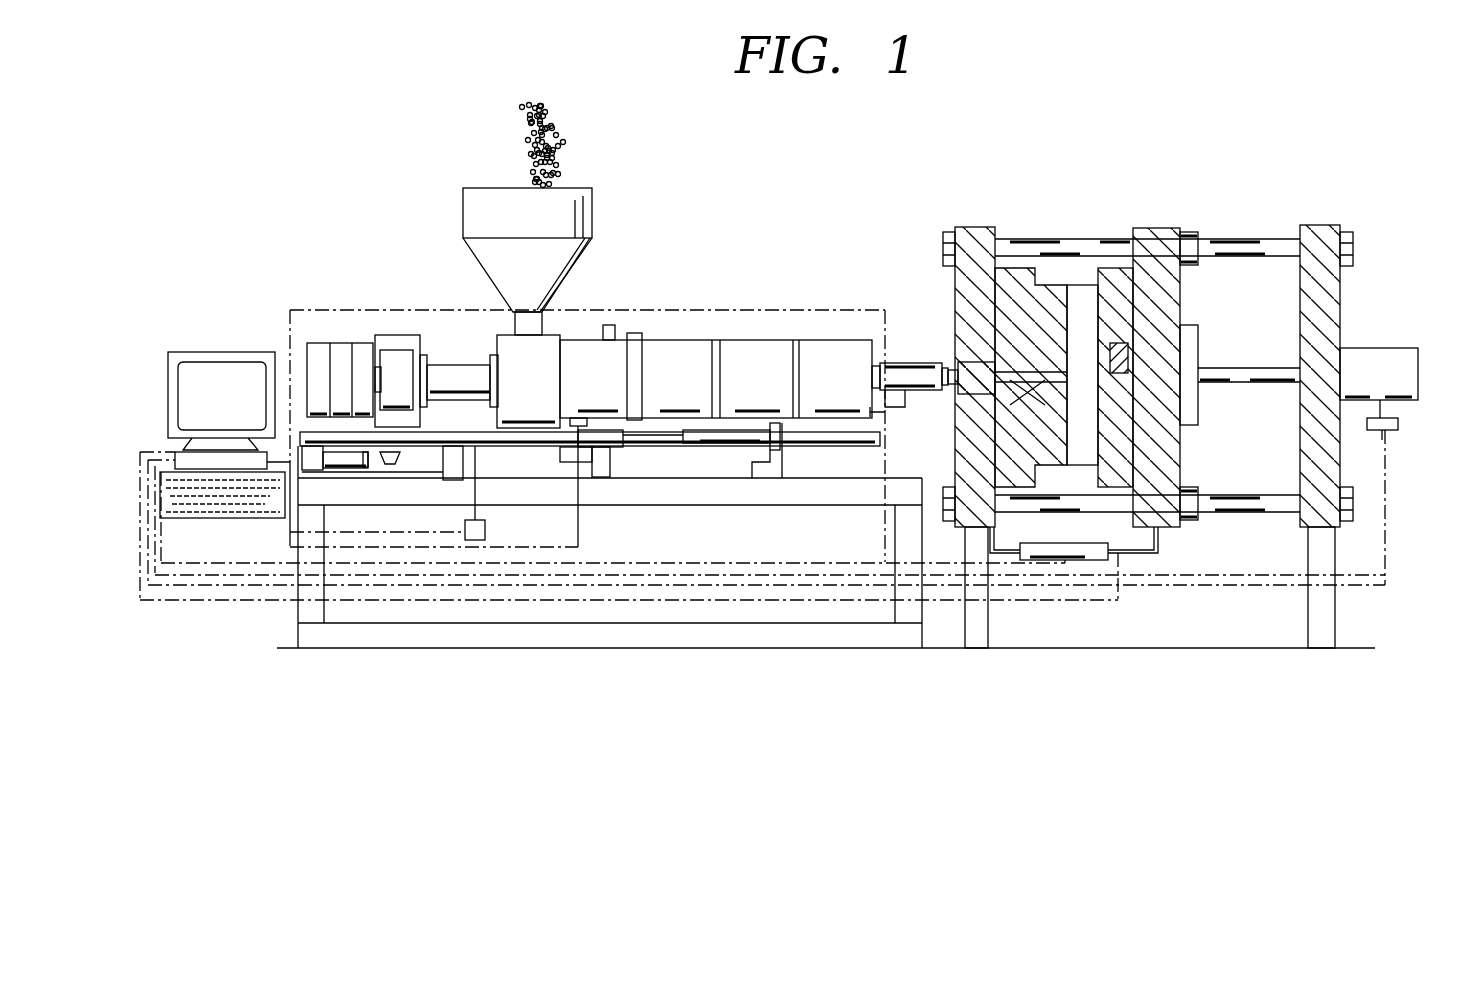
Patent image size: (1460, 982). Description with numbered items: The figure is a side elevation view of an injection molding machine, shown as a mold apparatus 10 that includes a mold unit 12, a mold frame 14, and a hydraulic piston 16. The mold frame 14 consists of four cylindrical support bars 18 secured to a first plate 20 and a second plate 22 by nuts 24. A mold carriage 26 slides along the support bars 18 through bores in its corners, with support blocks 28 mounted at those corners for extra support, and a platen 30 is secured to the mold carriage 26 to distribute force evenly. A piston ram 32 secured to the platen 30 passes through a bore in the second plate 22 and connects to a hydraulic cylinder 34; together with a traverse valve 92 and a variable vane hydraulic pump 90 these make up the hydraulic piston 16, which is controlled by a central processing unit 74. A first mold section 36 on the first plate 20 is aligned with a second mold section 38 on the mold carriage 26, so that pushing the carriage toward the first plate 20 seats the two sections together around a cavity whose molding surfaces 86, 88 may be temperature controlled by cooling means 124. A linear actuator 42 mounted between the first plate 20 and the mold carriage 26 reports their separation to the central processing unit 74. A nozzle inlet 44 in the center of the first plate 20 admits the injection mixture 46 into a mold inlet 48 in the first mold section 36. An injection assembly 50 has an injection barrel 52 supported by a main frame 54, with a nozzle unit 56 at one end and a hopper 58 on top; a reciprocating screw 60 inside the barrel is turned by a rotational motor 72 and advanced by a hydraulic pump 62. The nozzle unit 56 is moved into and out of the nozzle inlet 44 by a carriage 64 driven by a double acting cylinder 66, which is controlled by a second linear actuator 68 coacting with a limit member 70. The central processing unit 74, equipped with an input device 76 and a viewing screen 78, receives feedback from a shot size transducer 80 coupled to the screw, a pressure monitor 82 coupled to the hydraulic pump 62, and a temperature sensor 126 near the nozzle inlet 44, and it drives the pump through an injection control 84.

The mold apparatus 10 is at (1010, 150).
The mold unit 12 is at (1069, 226).
The mold frame 14 is at (1095, 512).
The hydraulic piston 16 is at (1372, 295).
The support bars 18 is at (1250, 243).
The first plate 20 is at (965, 228).
The second plate 22 is at (1320, 227).
The nuts 24 is at (943, 252).
The mold carriage 26 is at (1150, 228).
The support blocks 28 is at (1190, 233).
The platen 30 is at (1195, 425).
The piston ram 32 is at (1245, 372).
The hydraulic cylinder 34 is at (1375, 358).
The first mold section 36 is at (1023, 270).
The second mold section 38 is at (1102, 270).
The linear actuator 42 is at (1075, 560).
The nozzle inlet 44 is at (952, 365).
The injection mixture 46 is at (560, 145).
The mold inlet 48 is at (1030, 393).
The injection assembly 50 is at (812, 295).
The injection barrel 52 is at (752, 353).
The main frame 54 is at (745, 633).
The nozzle unit 56 is at (900, 350).
The hopper 58 is at (490, 212).
The reciprocating screw 60 is at (452, 360).
The hydraulic pump 62 is at (588, 355).
The carriage 64 is at (292, 325).
The double acting cylinder 66 is at (335, 468).
The second linear actuator 68 is at (768, 437).
The limit member 70 is at (612, 445).
The rotational motor 72 is at (343, 355).
The central processing unit 74 is at (183, 457).
The input device 76 is at (200, 518).
The viewing screen 78 is at (200, 370).
The shot size transducer 80 is at (470, 520).
The pressure monitor 82 is at (613, 325).
The injection control 84 is at (592, 418).
The molding surface 86 is at (1068, 330).
The molding surface 88 is at (1100, 340).
The variable vane hydraulic pump 90 is at (1388, 432).
The traverse valve 92 is at (1385, 415).
The cooling means 124 is at (1120, 343).
The temperature sensor 126 is at (893, 407).